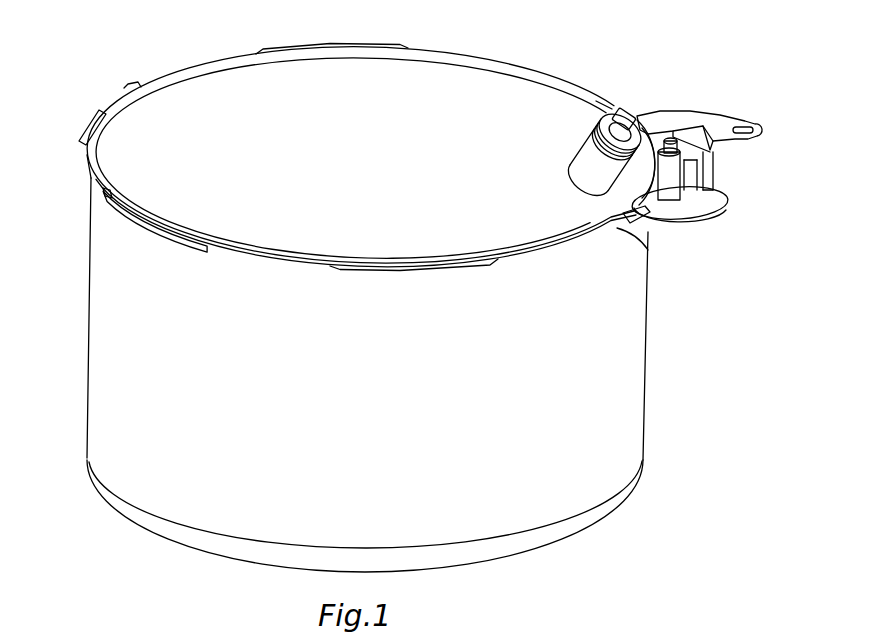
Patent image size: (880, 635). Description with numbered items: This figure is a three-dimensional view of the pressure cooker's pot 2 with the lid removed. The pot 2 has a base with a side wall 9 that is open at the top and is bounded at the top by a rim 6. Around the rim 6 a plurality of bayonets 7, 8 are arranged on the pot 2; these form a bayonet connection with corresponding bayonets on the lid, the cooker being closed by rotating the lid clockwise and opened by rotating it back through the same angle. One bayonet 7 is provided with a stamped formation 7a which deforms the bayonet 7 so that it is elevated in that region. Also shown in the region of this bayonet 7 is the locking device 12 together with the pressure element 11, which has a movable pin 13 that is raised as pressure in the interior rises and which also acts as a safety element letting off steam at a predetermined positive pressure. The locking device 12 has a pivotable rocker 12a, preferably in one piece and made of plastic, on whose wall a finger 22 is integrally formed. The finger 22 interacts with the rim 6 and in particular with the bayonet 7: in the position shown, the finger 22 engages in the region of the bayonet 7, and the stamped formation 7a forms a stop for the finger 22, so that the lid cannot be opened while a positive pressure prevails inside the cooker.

The pot 2 is at (645, 380).
The rim 6 is at (528, 72).
The bayonet 7 is at (84, 128).
The stamped formation 7a is at (640, 192).
The bayonet 8 is at (128, 218).
The side wall 9 is at (101, 338).
The pressure element 11 is at (623, 99).
The locking device 12 is at (727, 115).
The rocker 12a is at (720, 150).
The pin 13 is at (668, 110).
The finger 22 is at (648, 226).